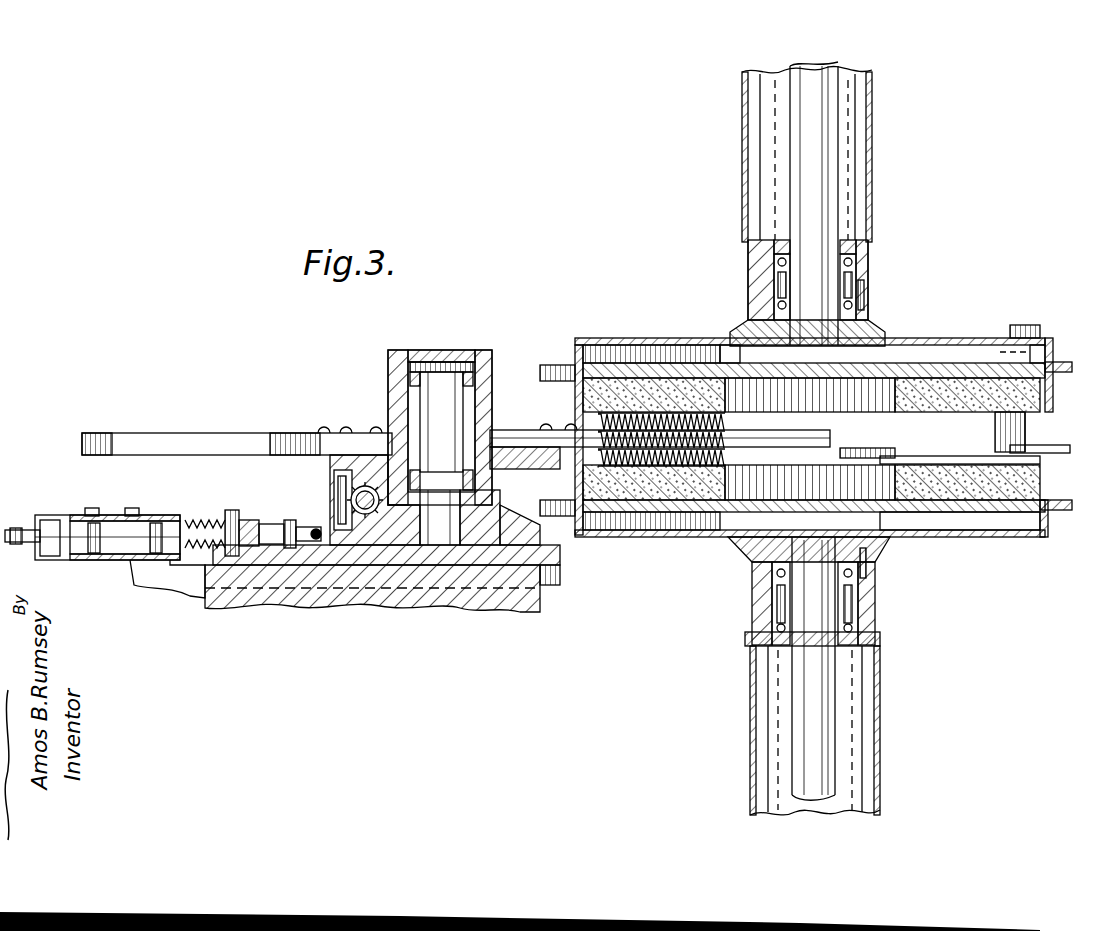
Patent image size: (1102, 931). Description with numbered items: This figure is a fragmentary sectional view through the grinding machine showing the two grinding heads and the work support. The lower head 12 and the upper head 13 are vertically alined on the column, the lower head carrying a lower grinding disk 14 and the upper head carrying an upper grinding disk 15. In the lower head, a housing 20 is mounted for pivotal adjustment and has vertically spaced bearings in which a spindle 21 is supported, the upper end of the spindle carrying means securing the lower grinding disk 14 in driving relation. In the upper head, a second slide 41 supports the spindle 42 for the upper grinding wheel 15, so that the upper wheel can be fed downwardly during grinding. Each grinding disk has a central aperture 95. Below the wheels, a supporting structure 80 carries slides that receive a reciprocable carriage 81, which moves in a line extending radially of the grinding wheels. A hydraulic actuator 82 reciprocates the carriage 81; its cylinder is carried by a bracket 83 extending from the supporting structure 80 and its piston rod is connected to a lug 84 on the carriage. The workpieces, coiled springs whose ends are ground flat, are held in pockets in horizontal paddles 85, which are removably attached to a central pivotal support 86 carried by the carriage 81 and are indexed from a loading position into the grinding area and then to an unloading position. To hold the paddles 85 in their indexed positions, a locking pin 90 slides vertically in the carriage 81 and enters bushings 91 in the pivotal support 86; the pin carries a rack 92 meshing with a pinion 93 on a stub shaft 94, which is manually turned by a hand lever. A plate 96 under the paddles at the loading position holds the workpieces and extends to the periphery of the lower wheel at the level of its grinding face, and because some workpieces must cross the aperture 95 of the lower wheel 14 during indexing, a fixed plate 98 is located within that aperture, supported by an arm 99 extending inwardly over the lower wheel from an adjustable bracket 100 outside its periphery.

The lower head 12 is at (884, 716).
The upper head 13 is at (880, 165).
The lower grinding disk 14 is at (1002, 485).
The upper grinding disk 15 is at (972, 395).
The housing 20 is at (872, 602).
The spindle 21 is at (830, 675).
The second slide 41 is at (866, 265).
The spindle 42 is at (820, 120).
The supporting structure 80 is at (235, 612).
The carriage 81 is at (300, 565).
The hydraulic actuator 82 is at (112, 560).
The bracket 83 is at (165, 585).
The lug 84 is at (252, 520).
The paddles 85 is at (150, 433).
The central pivotal support 86 is at (492, 366).
The pin 90 is at (290, 522).
The bushings 91 is at (344, 460).
The rack 92 is at (350, 503).
The pinion 93 is at (408, 512).
The stub shaft 94 is at (408, 480).
The central aperture 95 is at (735, 400).
The plate 96 is at (580, 466).
The fixed plate 98 is at (838, 464).
The arm 99 is at (1018, 448).
The adjustable bracket 100 is at (1048, 345).